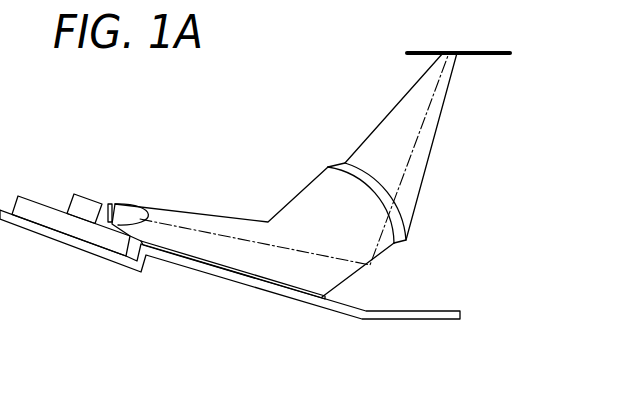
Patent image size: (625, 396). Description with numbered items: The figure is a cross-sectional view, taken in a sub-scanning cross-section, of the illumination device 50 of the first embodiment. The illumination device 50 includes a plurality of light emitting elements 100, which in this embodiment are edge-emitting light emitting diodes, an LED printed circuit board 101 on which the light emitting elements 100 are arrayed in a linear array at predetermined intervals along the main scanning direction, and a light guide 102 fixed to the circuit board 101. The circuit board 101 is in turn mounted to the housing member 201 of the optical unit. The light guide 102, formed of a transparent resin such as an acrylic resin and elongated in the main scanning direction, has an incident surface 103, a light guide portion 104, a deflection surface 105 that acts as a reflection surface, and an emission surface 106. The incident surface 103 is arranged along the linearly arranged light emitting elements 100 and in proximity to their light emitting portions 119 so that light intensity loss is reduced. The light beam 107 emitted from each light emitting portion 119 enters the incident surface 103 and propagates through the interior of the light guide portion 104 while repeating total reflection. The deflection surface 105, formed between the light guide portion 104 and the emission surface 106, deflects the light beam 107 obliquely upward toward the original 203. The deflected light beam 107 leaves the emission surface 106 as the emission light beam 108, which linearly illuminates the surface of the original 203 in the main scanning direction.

The illumination device 50 is at (230, 94).
The light emitting element 100 is at (85, 203).
The circuit board 101 is at (46, 205).
The light guide 102 is at (297, 196).
The incident surface 103 is at (109, 204).
The light guide portion 104 is at (223, 252).
The deflection surface 105 is at (386, 250).
The emission surface 106 is at (368, 178).
The light beam 107 is at (204, 233).
The emission light beam 108 is at (376, 128).
The light emitting portion 119 is at (140, 206).
The housing member 201 is at (211, 274).
The original 203 is at (505, 56).